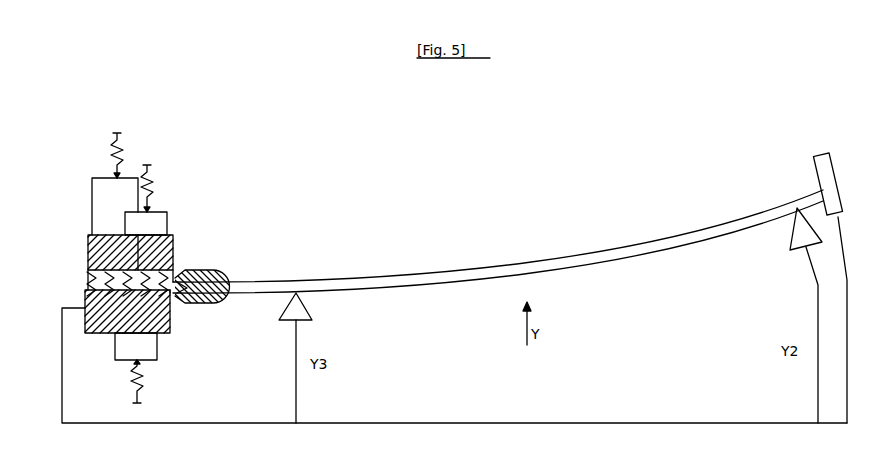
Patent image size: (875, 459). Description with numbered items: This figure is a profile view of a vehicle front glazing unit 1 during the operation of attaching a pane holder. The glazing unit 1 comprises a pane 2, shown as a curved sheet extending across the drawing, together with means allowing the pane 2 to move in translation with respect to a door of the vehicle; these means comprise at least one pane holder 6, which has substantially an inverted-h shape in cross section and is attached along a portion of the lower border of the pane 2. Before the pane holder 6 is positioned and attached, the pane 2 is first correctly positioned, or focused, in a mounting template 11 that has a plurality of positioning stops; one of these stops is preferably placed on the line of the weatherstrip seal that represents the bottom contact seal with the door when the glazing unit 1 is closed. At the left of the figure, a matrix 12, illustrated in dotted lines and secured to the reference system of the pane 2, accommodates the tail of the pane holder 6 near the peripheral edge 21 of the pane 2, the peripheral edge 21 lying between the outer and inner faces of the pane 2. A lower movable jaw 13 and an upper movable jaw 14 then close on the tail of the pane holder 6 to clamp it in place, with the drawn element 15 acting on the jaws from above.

The glazing unit 1 is at (607, 187).
The pane 2 is at (537, 264).
The pane holder 6 is at (211, 264).
The mounting template 11 is at (815, 157).
The matrix 12 is at (108, 330).
The lower movable jaw 13 is at (168, 337).
The upper movable jaw 14 is at (173, 235).
The actuator 15 is at (132, 178).
The peripheral edge 21 is at (220, 270).